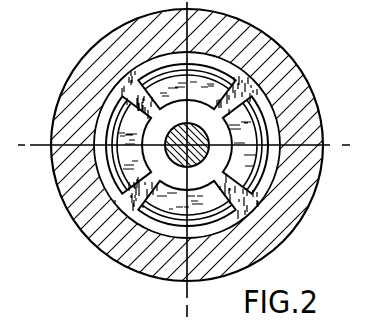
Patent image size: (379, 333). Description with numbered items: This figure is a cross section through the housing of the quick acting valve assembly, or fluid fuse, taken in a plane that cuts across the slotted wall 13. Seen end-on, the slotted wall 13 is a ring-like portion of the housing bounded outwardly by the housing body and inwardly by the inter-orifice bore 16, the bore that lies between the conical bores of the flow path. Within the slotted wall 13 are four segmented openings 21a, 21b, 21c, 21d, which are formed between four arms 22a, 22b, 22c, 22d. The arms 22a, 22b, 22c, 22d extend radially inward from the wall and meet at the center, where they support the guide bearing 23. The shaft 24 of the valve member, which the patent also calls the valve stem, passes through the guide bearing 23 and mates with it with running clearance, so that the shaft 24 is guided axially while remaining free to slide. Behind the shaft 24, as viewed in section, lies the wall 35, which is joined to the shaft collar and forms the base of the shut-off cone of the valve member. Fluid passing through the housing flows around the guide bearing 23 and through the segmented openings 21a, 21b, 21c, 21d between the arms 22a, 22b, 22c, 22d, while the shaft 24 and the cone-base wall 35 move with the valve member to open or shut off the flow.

The slotted wall 13 is at (250, 87).
The inter-orifice bore 16 is at (106, 170).
The segmented opening 21a is at (277, 117).
The segmented opening 21b is at (224, 215).
The segmented opening 21c is at (112, 117).
The segmented opening 21d is at (165, 63).
The arm 22a is at (240, 192).
The arm 22b is at (150, 208).
The arm 22c is at (118, 122).
The arm 22d is at (200, 77).
The guide bearing 23 is at (208, 138).
The valve stem or shaft 24 is at (115, 207).
The wall 35 is at (138, 215).